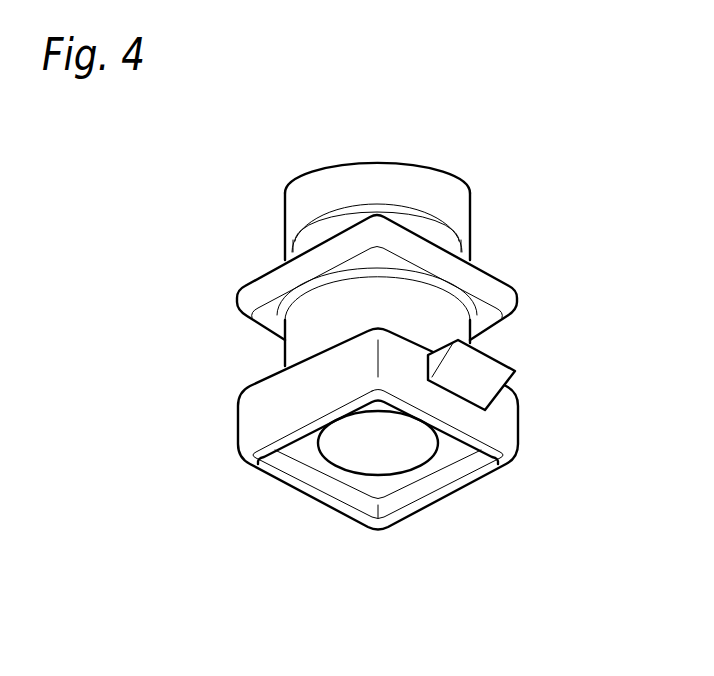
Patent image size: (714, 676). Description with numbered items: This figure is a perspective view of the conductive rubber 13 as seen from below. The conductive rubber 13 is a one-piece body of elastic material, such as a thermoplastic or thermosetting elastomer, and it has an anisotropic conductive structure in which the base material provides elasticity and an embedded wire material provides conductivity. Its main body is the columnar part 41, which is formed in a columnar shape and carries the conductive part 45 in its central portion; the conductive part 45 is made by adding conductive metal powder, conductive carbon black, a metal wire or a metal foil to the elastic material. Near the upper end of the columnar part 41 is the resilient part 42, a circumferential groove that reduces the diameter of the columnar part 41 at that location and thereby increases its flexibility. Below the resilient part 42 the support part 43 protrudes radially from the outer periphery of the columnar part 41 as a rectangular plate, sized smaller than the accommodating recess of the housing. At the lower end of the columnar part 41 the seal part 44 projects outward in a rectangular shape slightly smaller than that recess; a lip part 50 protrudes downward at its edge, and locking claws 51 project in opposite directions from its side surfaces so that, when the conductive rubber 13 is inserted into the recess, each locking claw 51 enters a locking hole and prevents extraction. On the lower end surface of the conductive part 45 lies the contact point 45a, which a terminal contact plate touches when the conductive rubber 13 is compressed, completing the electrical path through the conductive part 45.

The conductive rubber 13 is at (497, 175).
The resilient part 42 is at (310, 240).
The support part 43 is at (250, 293).
The columnar part 41 is at (296, 345).
The seal part 44 is at (243, 422).
The lip part 50 is at (291, 489).
The conductive part 45 is at (410, 451).
The contact point 45a is at (373, 467).
The locking claw 51 is at (507, 361).